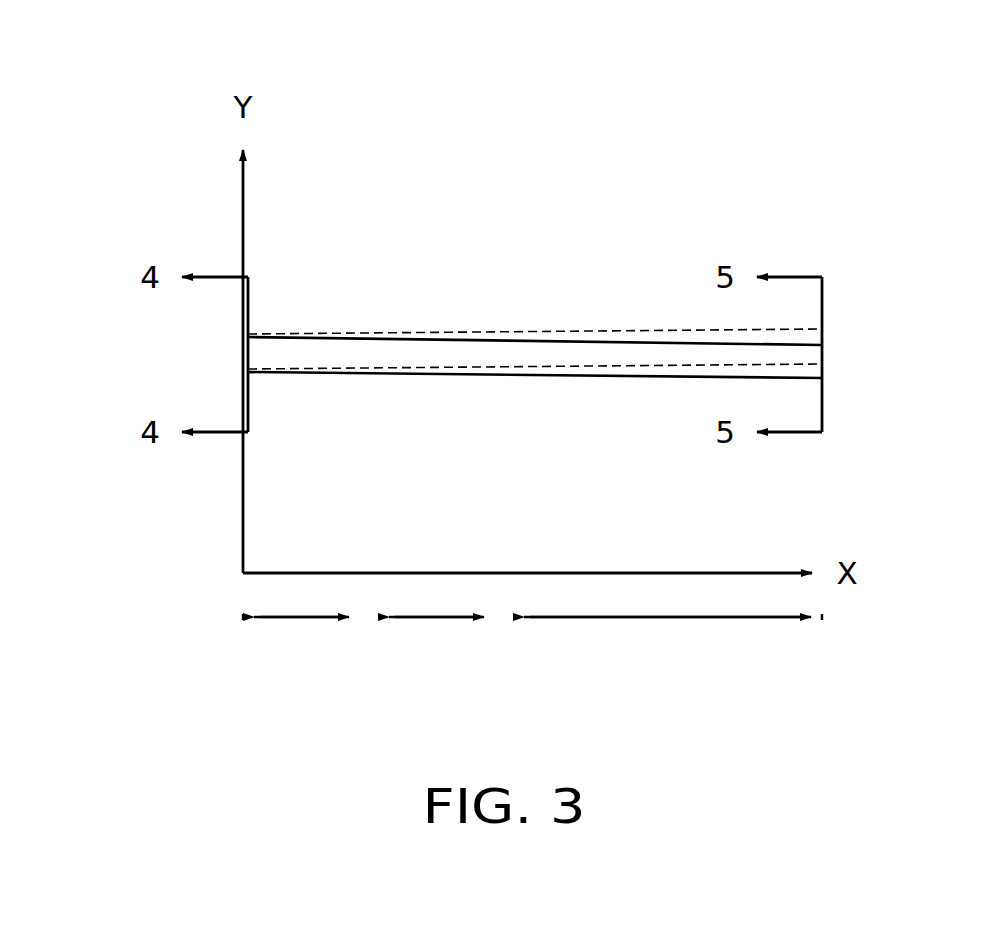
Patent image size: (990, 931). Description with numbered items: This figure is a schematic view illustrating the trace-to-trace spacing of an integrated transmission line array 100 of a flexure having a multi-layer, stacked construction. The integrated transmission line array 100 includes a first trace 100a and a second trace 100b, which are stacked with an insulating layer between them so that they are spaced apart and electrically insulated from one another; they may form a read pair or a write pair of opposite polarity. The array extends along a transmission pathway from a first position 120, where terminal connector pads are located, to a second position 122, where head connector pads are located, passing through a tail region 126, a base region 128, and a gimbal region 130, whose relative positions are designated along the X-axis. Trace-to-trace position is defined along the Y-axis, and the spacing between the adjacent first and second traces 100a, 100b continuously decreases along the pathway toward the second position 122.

The integrated transmission line array 100 is at (459, 162).
The first trace 100a is at (795, 370).
The second trace 100b is at (691, 333).
The first position 120 is at (827, 638).
The second position 122 is at (242, 638).
The tail region 126 is at (644, 642).
The base region 128 is at (435, 642).
The gimbal region 130 is at (303, 642).